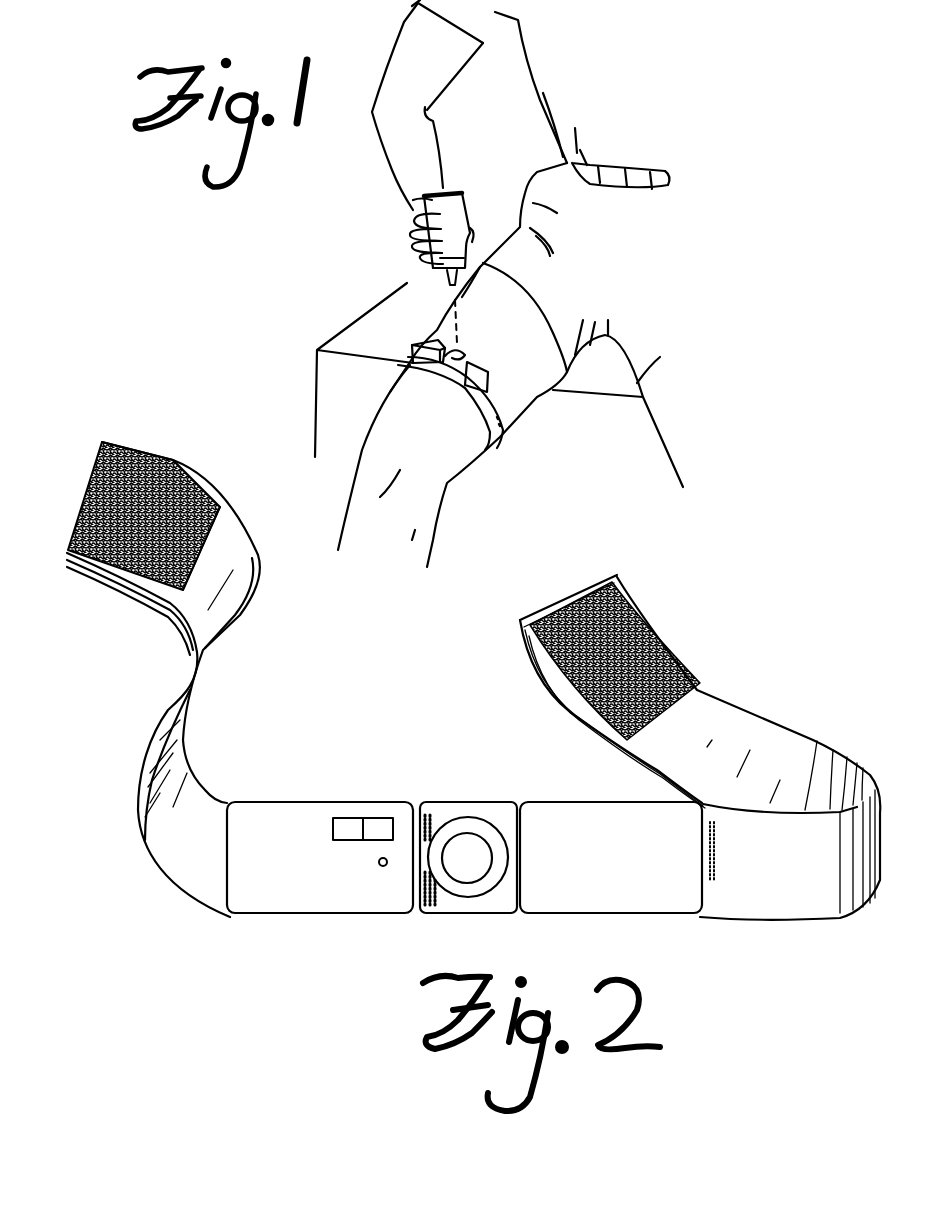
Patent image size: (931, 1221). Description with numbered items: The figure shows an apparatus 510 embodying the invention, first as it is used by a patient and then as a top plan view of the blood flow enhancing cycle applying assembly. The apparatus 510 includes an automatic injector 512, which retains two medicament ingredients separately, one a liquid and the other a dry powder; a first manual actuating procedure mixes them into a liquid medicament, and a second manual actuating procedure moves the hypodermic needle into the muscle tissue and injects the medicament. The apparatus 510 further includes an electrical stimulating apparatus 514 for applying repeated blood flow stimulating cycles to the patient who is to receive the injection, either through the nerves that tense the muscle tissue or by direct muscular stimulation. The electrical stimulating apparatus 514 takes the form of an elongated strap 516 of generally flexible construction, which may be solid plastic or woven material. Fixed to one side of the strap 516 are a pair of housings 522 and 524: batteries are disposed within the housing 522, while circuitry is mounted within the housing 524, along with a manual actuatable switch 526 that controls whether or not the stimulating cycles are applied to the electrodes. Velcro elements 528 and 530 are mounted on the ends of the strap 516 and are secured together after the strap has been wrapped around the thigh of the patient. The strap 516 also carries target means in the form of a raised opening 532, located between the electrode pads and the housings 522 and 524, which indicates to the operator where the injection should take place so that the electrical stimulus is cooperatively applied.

In FIG. 1, the apparatus 510 is at (364, 262).
In FIG. 1, the automatic injector 512 is at (452, 190).
In FIG. 1, the electrical stimulating apparatus 514 is at (508, 440).
In FIG. 2, the electrical stimulating apparatus 514 is at (465, 800).
In FIG. 1, the elongated strap 516 is at (500, 437).
In FIG. 2, the elongated strap 516 is at (497, 872).
In FIG. 2, the housing 522 is at (540, 907).
In FIG. 2, the housing 524 is at (253, 907).
In FIG. 2, the manual actuatable switch 526 is at (380, 820).
In FIG. 2, the Velcro element 528 is at (643, 627).
In FIG. 2, the Velcro element 530 is at (177, 460).
In FIG. 2, the raised opening 532 is at (489, 853).